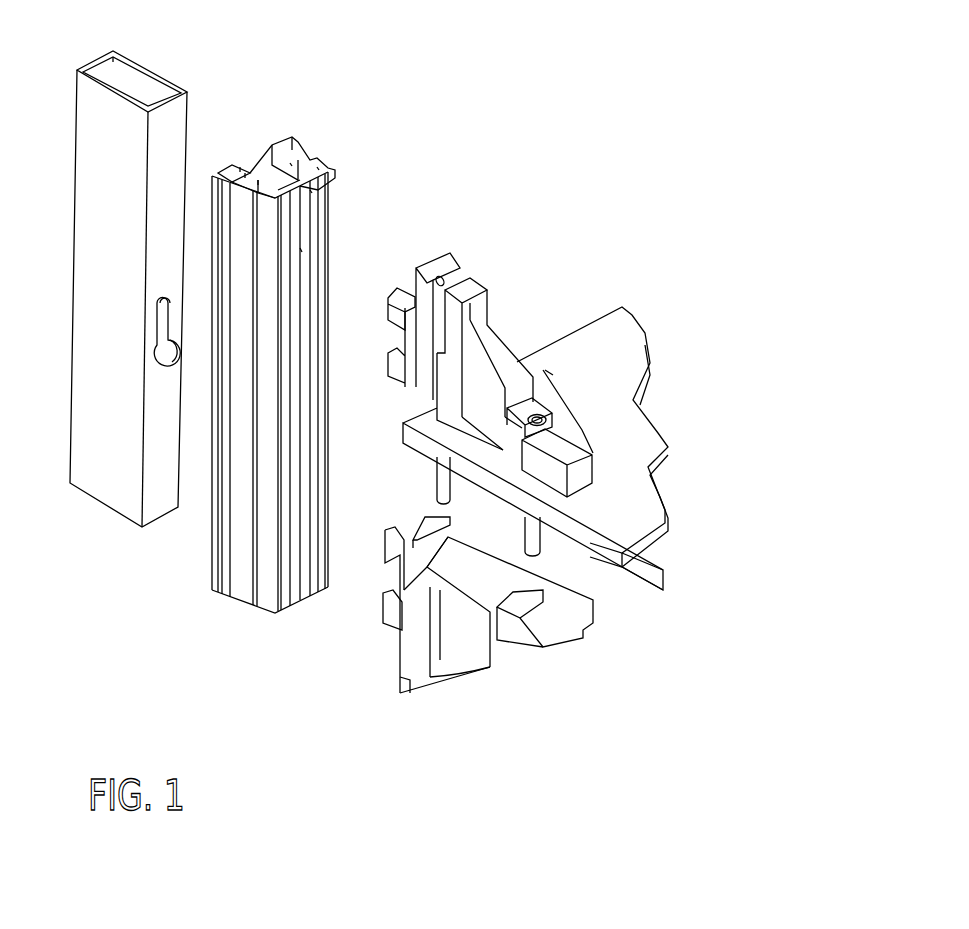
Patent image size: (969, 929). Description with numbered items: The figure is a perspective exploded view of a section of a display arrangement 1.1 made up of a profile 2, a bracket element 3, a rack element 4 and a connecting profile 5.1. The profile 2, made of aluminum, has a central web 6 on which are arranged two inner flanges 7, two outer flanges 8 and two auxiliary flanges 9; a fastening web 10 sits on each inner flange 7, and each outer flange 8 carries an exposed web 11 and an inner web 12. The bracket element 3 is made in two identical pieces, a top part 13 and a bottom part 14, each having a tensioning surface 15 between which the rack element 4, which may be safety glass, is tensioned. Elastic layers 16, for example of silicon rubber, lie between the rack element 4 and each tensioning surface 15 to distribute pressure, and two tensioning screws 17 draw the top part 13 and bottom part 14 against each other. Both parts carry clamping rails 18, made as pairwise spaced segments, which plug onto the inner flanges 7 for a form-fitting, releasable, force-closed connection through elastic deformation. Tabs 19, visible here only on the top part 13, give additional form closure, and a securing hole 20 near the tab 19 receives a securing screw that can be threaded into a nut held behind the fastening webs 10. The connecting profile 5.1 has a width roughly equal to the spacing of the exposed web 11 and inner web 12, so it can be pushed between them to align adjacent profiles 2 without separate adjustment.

The display arrangement 1.1 is at (114, 281).
The connecting profile 5.1 is at (177, 130).
The profile 2 is at (327, 650).
The bracket element 3 is at (762, 295).
The rack element 4 is at (622, 345).
The central web 6 is at (290, 163).
The inner flanges 7 is at (318, 165).
The outer flanges 8 is at (245, 173).
The auxiliary flanges 9 is at (310, 190).
The fastening web 10 is at (318, 218).
The exposed web 11 is at (240, 167).
The inner web 12 is at (258, 180).
The top part 13 is at (493, 343).
The bottom part 14 is at (503, 660).
The tensioning surface 15 is at (563, 600).
The elastic layers 16 is at (650, 568).
The tensioning screws 17 is at (538, 413).
The clamping rails 18 is at (395, 302).
The tabs 19 is at (432, 258).
The securing hole 20 is at (455, 272).